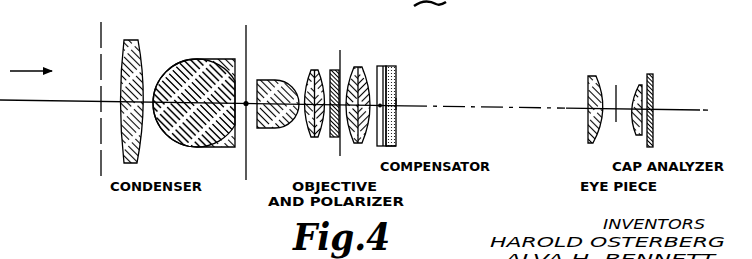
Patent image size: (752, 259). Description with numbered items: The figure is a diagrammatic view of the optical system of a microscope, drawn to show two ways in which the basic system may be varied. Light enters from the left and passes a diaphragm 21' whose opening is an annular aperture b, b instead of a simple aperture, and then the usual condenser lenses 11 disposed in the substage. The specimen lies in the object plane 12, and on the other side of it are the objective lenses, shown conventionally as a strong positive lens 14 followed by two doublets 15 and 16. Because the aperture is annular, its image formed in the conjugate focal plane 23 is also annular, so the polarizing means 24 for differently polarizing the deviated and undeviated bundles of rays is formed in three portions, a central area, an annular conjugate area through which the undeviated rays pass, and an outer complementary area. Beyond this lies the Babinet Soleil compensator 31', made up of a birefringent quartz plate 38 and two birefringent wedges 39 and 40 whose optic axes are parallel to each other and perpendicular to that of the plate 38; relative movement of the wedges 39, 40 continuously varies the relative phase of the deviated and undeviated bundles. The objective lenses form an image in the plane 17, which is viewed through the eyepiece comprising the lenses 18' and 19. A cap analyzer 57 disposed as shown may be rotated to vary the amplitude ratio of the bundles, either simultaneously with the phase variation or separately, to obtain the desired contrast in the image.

The condenser lenses 11 is at (176, 70).
The object plane 12 is at (248, 33).
The strong positive lens 14 is at (275, 83).
The doublet 15 is at (312, 70).
The doublet 16 is at (360, 68).
The image plane 17 is at (615, 124).
The eyepiece lens 18' is at (602, 101).
The eyepiece lens 19 is at (637, 86).
The diaphragm 21' is at (93, 92).
The conjugate focal plane 23 is at (345, 110).
The polarizing means 24 is at (333, 139).
The Babinet Soleil compensator 31' is at (415, 91).
The birefringent plate 38 is at (380, 66).
The birefringent wedge 39 is at (391, 146).
The birefringent wedge 40 is at (393, 66).
The cap analyzer 57 is at (654, 80).
The annular aperture b is at (99, 71).